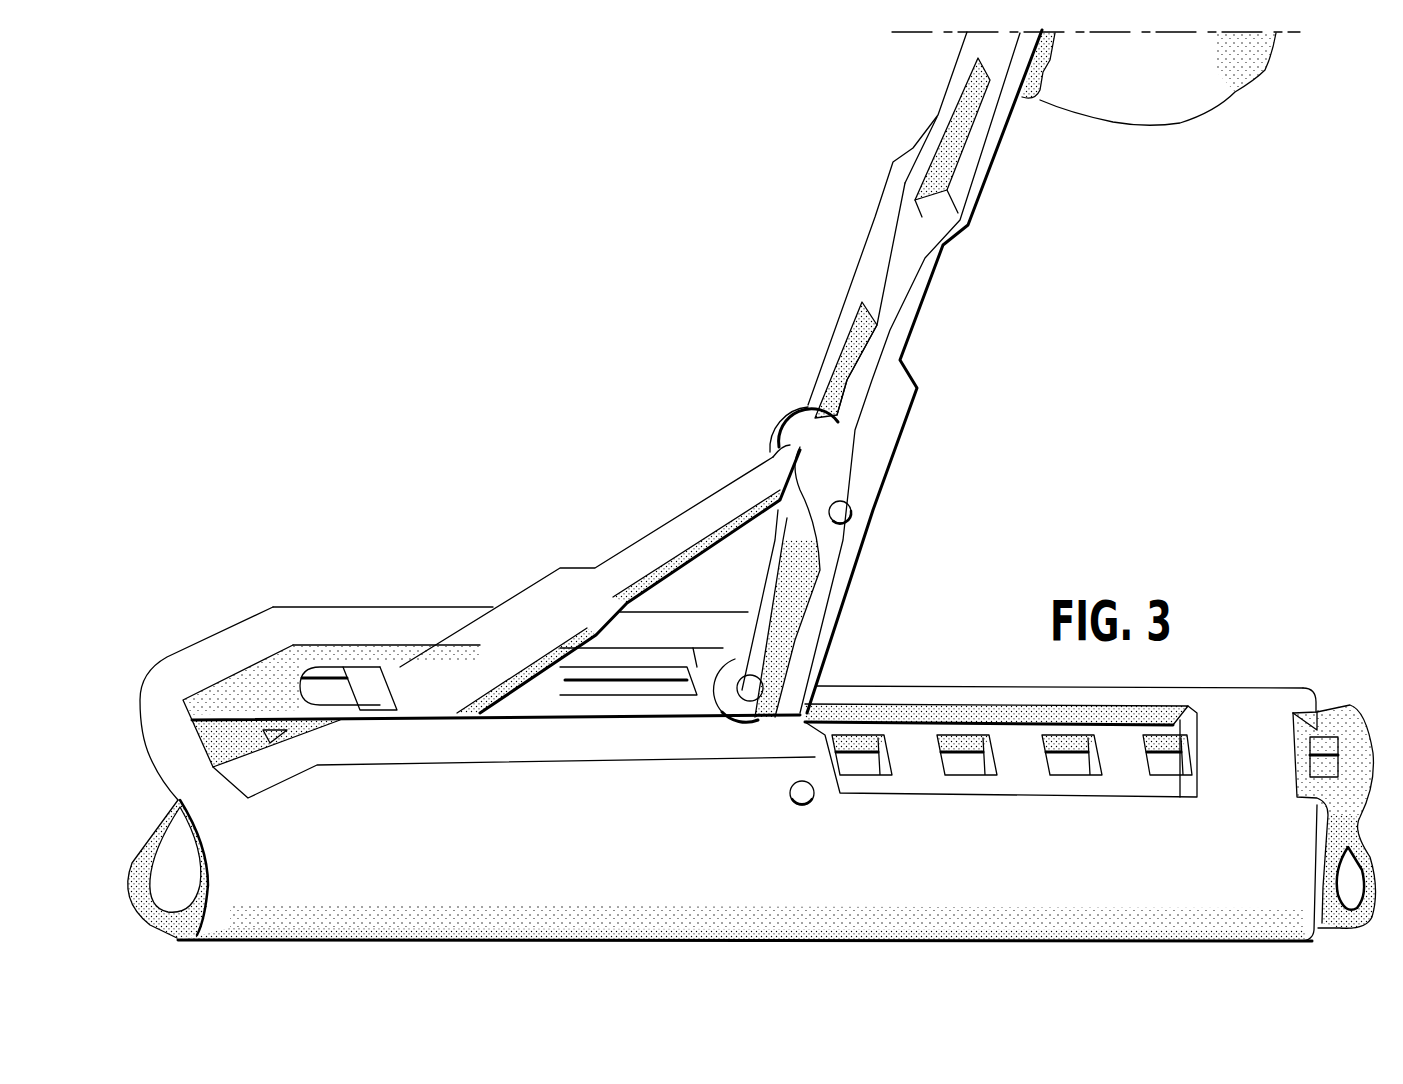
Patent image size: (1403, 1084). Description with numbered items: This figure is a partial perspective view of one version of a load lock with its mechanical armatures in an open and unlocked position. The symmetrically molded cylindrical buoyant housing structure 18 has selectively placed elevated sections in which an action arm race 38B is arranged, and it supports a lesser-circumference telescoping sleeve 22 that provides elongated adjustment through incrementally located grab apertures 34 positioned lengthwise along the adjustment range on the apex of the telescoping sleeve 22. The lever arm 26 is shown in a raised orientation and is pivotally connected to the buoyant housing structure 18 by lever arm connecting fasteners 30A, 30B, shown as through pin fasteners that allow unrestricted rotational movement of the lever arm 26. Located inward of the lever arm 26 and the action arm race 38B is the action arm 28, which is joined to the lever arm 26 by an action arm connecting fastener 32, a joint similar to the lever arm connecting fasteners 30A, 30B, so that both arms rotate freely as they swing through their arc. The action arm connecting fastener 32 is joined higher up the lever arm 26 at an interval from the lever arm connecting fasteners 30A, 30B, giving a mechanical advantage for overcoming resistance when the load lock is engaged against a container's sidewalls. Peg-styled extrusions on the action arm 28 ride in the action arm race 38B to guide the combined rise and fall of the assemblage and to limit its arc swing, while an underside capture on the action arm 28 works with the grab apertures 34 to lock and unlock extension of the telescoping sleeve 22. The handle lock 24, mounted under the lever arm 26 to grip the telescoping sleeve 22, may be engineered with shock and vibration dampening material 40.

The buoyant housing structure 18 is at (298, 618).
The telescoping sleeve 22 is at (918, 740).
The handle lock 24 is at (1133, 108).
The lever arm 26 is at (883, 280).
The action arm 28 is at (428, 672).
The lever arm connecting fastener 30A is at (808, 785).
The lever arm connecting fastener 30B is at (753, 690).
The action arm connecting fastener 32 is at (855, 510).
The grab apertures 34 is at (977, 760).
The action arm race 38B is at (343, 690).
The dampening material 40 is at (1033, 103).